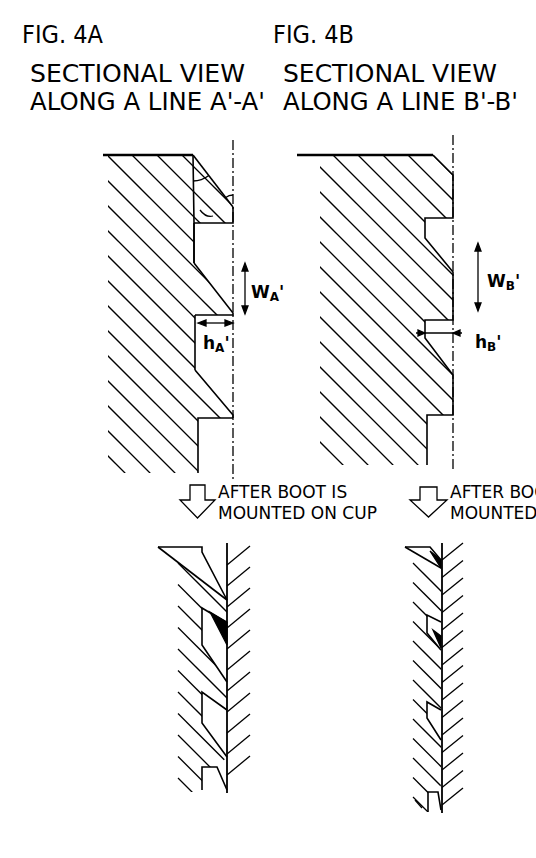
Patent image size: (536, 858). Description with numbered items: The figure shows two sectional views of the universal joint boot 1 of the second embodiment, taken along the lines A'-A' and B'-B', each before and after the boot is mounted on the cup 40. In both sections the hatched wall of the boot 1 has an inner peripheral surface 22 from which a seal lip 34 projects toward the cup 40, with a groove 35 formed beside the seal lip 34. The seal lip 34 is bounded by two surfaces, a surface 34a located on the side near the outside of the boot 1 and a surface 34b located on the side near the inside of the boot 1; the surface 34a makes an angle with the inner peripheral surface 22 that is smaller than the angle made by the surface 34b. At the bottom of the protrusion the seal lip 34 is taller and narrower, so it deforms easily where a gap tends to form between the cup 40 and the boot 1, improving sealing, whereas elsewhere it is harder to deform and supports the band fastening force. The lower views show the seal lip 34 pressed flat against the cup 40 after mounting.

The boot 1 is at (187, 598).
The inner peripheral surface 22 is at (193, 230).
The seal lip 34 is at (232, 303).
The surface of seal lip 34a is at (222, 192).
The surface of seal lip 34b is at (216, 225).
The groove 35 is at (203, 248).
The cup 40 is at (322, 605).